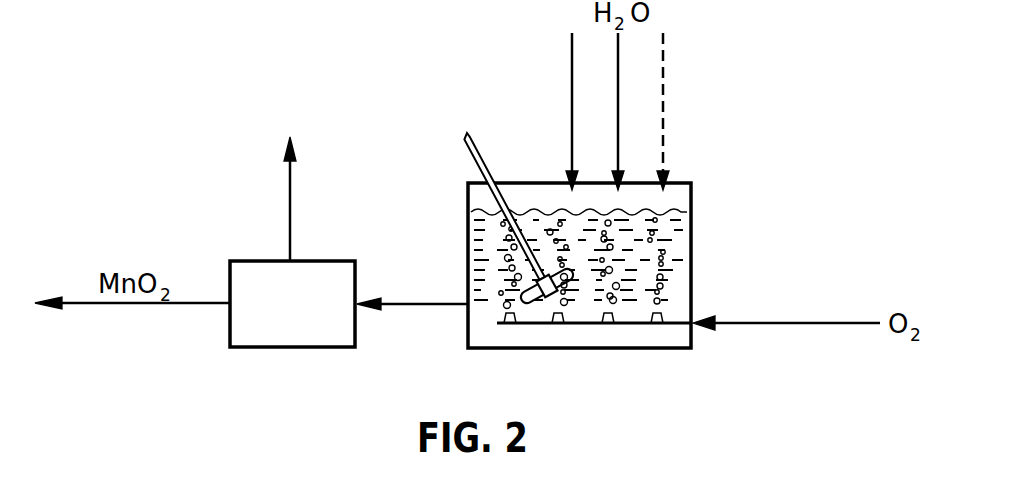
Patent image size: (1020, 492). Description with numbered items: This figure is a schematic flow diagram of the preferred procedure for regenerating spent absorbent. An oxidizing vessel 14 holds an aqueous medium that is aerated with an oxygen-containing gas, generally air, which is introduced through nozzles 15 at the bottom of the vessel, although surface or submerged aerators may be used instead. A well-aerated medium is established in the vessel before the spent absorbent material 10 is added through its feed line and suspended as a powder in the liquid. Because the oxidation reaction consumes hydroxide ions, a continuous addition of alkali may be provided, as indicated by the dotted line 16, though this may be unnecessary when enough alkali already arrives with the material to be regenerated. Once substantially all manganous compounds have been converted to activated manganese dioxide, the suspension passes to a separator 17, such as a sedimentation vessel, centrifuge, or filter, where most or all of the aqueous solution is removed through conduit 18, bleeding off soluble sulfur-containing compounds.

The spent absorbent material 10 is at (571, 62).
The oxidizing vessel 14 is at (691, 225).
The nozzles 15 is at (660, 316).
The dotted line 16 is at (665, 88).
The separator 17 is at (292, 337).
The conduit 18 is at (290, 197).